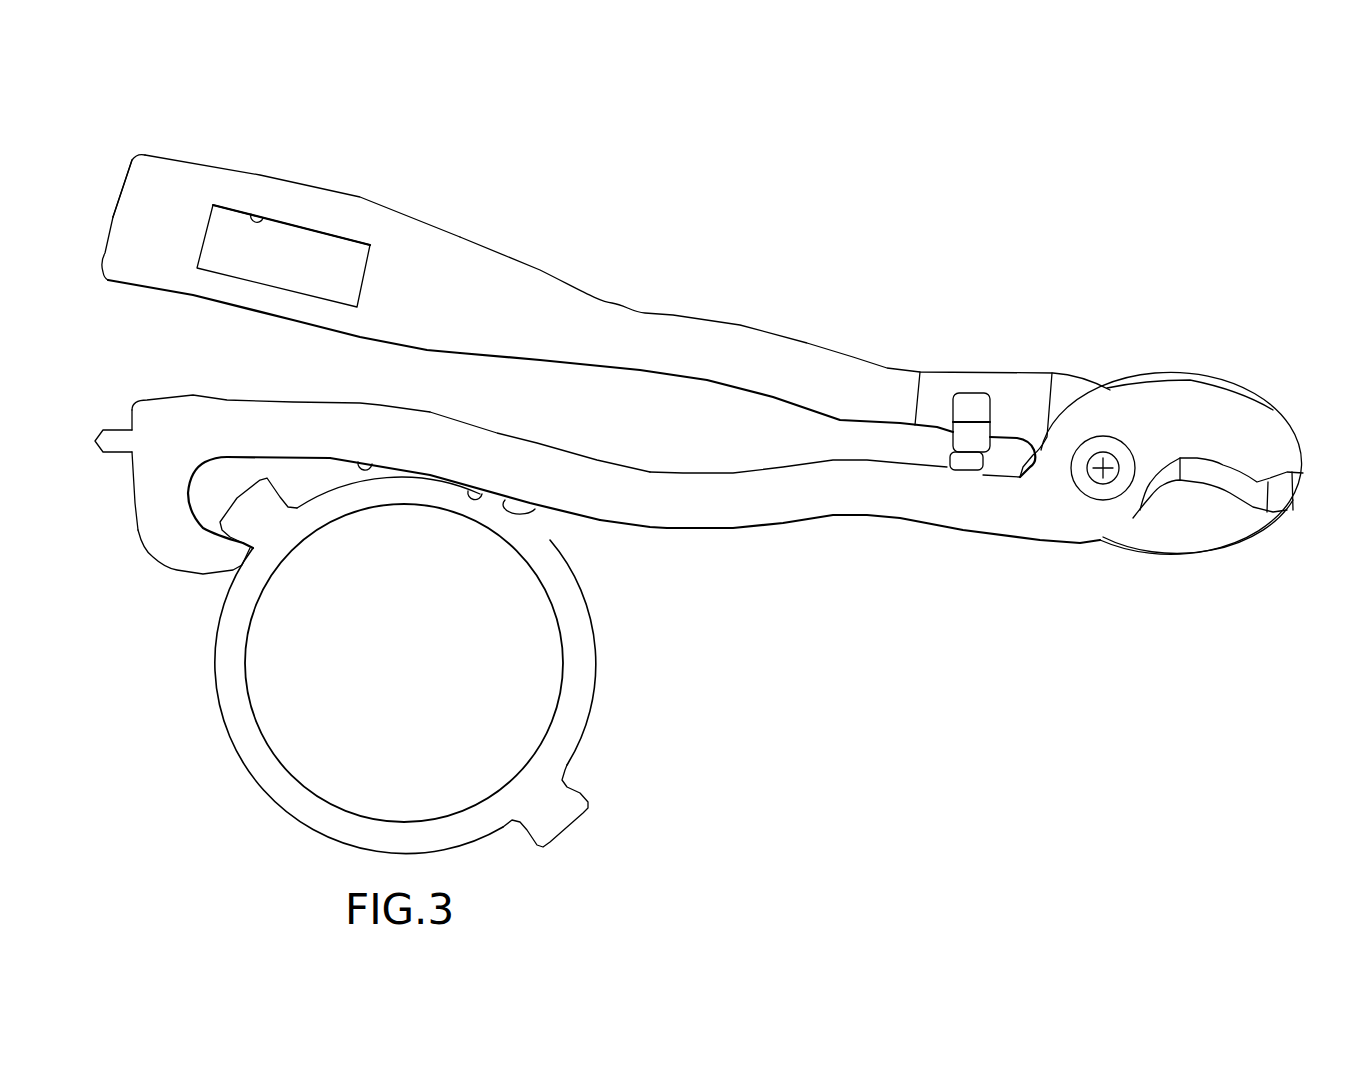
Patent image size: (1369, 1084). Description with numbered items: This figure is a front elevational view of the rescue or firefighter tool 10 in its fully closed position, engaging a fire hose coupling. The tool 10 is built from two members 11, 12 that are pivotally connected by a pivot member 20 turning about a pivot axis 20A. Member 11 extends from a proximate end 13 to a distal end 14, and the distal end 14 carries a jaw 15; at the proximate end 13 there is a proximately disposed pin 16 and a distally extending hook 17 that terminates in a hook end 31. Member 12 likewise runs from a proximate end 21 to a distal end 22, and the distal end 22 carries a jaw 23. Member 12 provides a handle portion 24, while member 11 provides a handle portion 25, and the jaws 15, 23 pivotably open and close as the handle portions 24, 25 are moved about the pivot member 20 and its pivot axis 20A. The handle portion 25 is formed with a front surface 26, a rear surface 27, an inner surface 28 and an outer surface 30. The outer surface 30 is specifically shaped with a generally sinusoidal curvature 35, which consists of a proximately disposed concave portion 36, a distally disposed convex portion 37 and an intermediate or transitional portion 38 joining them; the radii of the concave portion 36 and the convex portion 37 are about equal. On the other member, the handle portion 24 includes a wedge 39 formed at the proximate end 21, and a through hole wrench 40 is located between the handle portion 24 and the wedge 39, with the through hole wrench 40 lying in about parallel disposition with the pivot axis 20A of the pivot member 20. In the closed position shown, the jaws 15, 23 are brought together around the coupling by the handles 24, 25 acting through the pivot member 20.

The rescue or firefighter tool 10 is at (752, 286).
The member 11 is at (692, 520).
The member 12 is at (647, 315).
The proximate end 13 is at (132, 495).
The distal end 14 is at (1287, 422).
The jaw 15 is at (1213, 395).
The pin 16 is at (97, 442).
The hook 17 is at (197, 573).
The pivot member 20 is at (1095, 497).
The pivot axis 20A is at (1110, 462).
The proximate end 21 is at (128, 182).
The distal end 22 is at (1283, 527).
The jaw 23 is at (1208, 550).
The handle portion 24 is at (358, 217).
The handle portion 25 is at (652, 518).
The front surface 26 is at (433, 438).
The rear surface 27 is at (380, 400).
The inner surface 28 is at (503, 435).
The outer surface 30 is at (577, 515).
The hook end 31 is at (248, 545).
The sinusoidal curvature 35 is at (543, 507).
The concave portion 36 is at (355, 457).
The convex portion 37 is at (620, 527).
The transitional portion 38 is at (490, 483).
The wedge 39 is at (122, 275).
The through hole wrench 40 is at (258, 215).